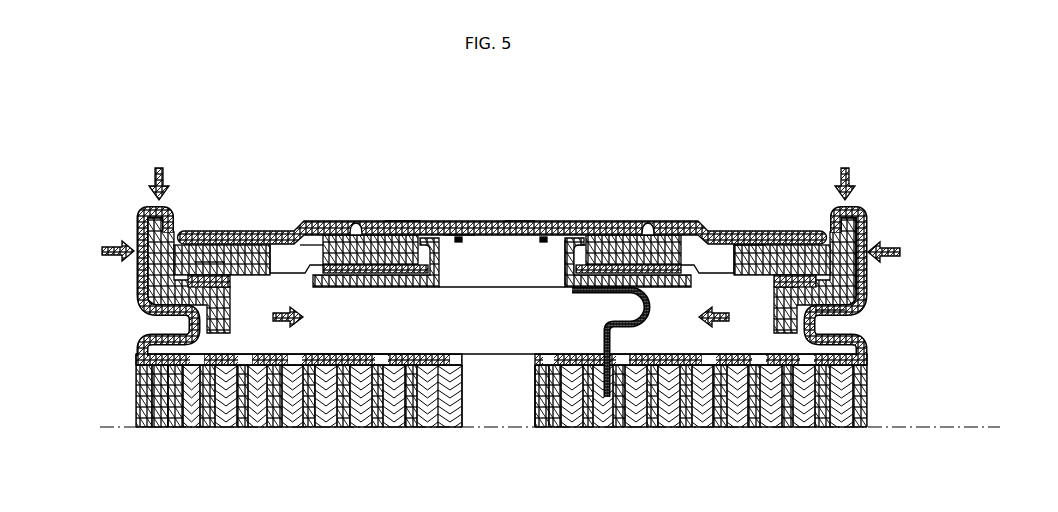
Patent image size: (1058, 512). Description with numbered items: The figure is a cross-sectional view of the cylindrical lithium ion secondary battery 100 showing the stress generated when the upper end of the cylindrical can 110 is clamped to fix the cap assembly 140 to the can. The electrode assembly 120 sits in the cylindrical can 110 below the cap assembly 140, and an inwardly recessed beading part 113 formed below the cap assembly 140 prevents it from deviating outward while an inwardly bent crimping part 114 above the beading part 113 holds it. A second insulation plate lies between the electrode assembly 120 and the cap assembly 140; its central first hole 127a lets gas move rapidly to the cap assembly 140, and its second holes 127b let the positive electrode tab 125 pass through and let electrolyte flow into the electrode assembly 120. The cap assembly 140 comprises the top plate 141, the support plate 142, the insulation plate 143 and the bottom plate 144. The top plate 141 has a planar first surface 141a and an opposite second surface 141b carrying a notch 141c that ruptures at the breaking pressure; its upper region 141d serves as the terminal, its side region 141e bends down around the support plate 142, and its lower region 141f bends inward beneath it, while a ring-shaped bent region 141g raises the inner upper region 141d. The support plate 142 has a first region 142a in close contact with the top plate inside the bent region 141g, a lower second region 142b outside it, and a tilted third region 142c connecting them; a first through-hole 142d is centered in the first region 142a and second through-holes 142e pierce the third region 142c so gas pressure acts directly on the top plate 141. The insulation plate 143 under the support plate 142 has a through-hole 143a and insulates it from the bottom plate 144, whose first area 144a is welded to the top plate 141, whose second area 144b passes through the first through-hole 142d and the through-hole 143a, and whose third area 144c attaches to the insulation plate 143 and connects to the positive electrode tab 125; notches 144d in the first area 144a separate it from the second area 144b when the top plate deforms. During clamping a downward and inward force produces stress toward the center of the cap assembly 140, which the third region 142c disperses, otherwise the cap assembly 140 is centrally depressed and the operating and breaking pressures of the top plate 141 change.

The cylindrical lithium ion secondary battery 100 is at (83, 122).
The cylindrical can 110 is at (870, 397).
The beading part 113 is at (815, 328).
The crimping part 114 is at (831, 229).
The electrode assembly 120 is at (846, 376).
The positive electrode tab 125 is at (636, 313).
The first hole 127a is at (495, 356).
The second hole 127b is at (345, 355).
The cap assembly 140 is at (549, 313).
The top plate 141 is at (867, 221).
The first surface 141a is at (402, 220).
The second surface 141b is at (458, 235).
The notch 141c is at (357, 223).
The upper region 141d is at (518, 228).
The side region 141e is at (856, 262).
The lower region 141f is at (783, 281).
The bent region 141g is at (714, 258).
The support plate 142 is at (250, 291).
The first region 142a is at (327, 222).
The second region 142b is at (210, 262).
The third region 142c is at (285, 236).
The first through-hole 142d is at (582, 240).
The second through-hole 142e is at (737, 243).
The insulation plate 143 is at (330, 278).
The through-hole 143a is at (445, 273).
The bottom plate 144 is at (673, 297).
The first area 144a is at (480, 240).
The second area 144b is at (557, 259).
The third area 144c is at (647, 280).
The notch 144d is at (543, 240).